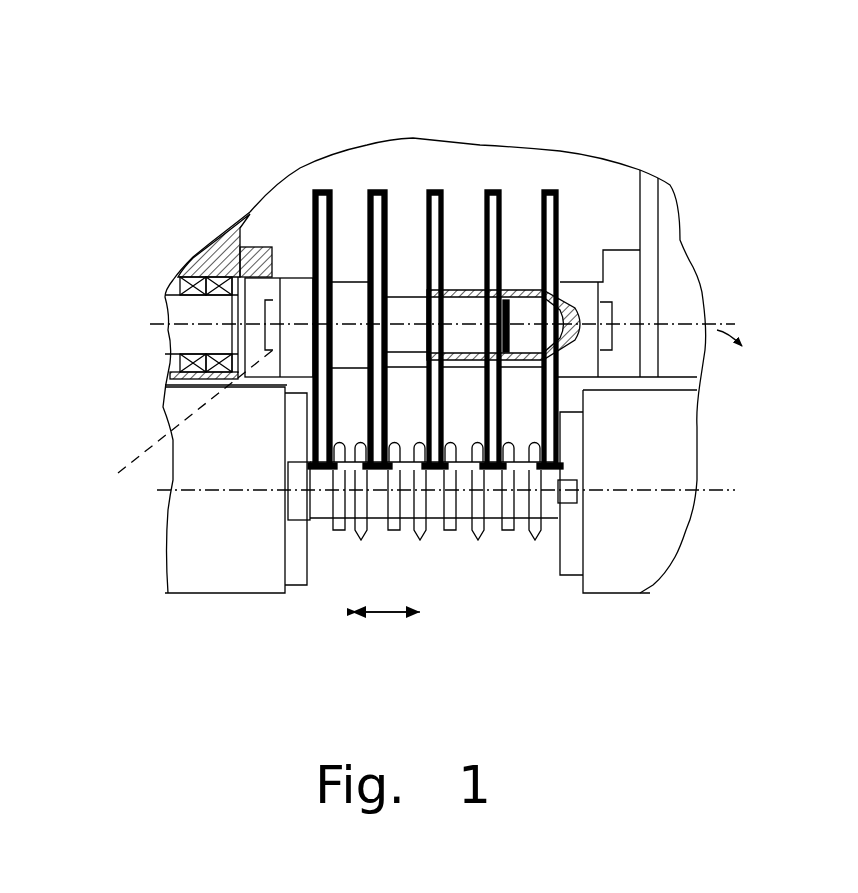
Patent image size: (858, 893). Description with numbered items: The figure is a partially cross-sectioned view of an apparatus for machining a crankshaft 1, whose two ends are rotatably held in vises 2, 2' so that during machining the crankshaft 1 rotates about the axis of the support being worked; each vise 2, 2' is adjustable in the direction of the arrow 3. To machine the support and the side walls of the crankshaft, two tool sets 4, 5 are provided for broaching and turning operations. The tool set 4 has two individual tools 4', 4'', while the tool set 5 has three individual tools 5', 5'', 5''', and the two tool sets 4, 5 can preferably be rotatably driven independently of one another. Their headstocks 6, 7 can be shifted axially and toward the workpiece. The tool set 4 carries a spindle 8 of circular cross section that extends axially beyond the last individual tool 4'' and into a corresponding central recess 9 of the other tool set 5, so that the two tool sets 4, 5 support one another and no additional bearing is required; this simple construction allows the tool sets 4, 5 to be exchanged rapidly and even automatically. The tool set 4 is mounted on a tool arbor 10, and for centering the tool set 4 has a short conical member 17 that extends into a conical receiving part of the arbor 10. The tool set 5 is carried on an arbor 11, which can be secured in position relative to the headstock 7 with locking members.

The crankshaft 1 is at (468, 538).
The vise 2 is at (237, 523).
The vise 2' is at (627, 527).
The arrow 3 is at (390, 612).
The tool set 4 is at (329, 258).
The individual tool 4' is at (277, 275).
The individual tool 4'' is at (402, 268).
The tool set 5 is at (601, 252).
The individual tool 5' is at (462, 266).
The individual tool 5'' is at (576, 259).
The individual tool 5''' is at (658, 256).
The headstock 6 is at (215, 262).
The headstock 7 is at (627, 278).
The spindle 8 is at (425, 313).
The central recess 9 is at (522, 340).
The tool arbor 10 is at (192, 335).
The arbor 11 is at (756, 348).
The conical member 17 is at (175, 423).